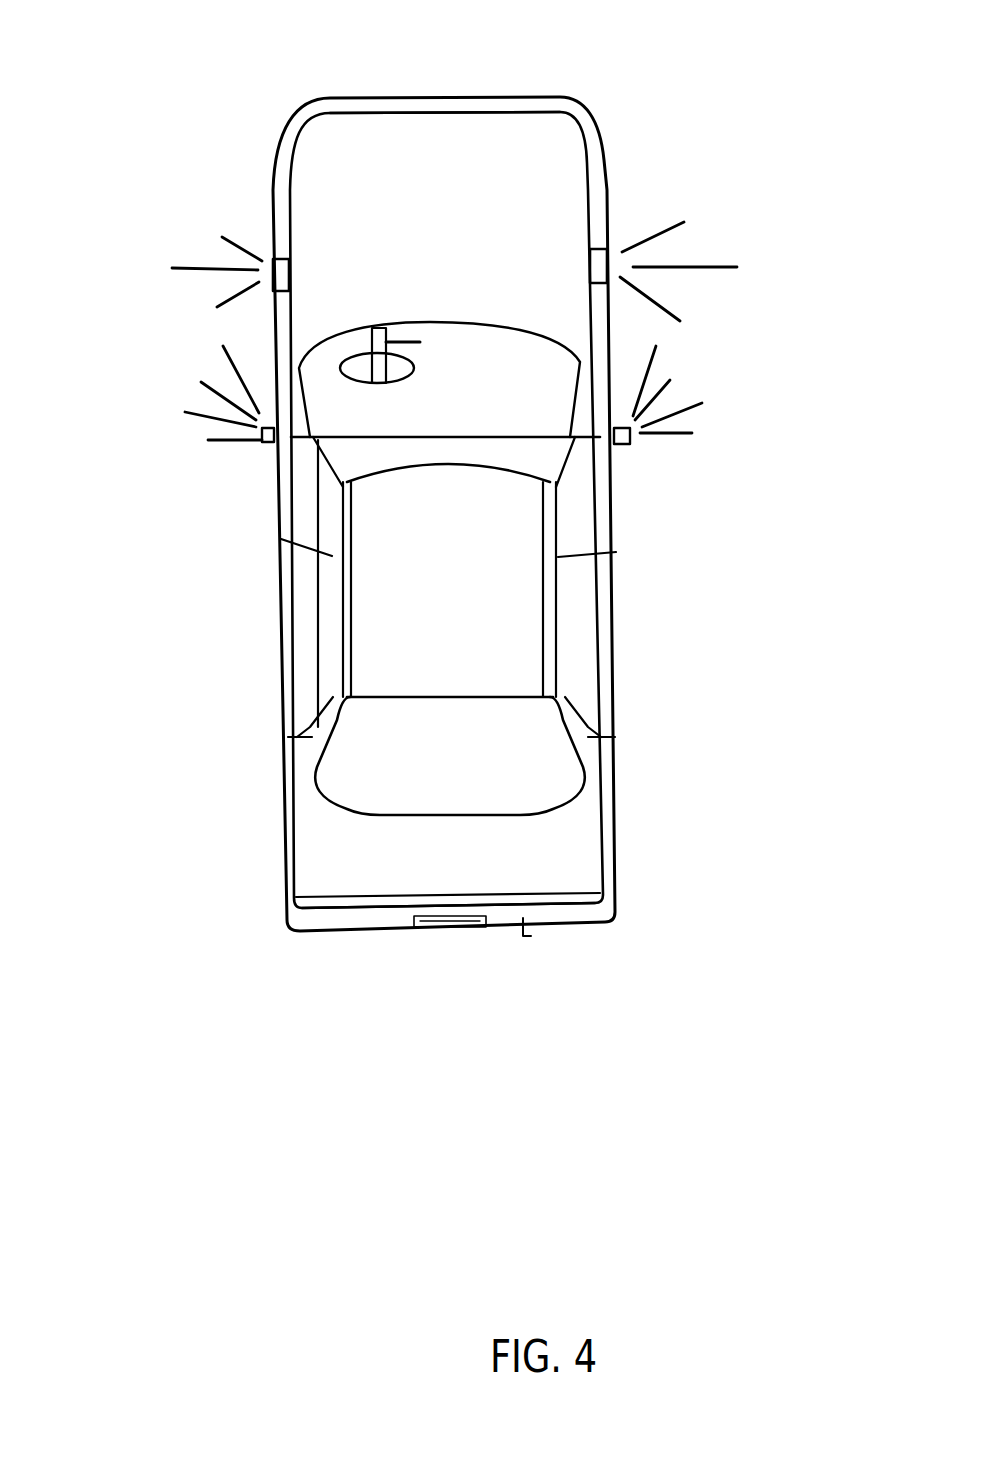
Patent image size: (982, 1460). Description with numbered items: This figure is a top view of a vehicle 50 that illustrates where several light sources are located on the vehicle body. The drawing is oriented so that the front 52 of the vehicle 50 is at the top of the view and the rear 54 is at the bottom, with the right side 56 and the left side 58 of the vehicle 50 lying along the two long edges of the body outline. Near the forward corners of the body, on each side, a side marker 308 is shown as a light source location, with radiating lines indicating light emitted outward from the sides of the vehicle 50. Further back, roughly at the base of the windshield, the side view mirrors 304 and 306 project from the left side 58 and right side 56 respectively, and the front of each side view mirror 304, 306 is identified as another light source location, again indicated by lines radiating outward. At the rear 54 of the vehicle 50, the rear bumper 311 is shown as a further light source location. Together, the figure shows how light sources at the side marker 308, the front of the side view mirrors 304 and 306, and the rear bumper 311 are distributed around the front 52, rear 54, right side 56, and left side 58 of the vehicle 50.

The vehicle 50 is at (285, 845).
The front 52 is at (410, 73).
The rear 54 is at (383, 931).
The right side 56 is at (625, 672).
The left side 58 is at (275, 683).
The side view mirror 304 is at (262, 443).
The side view mirror 306 is at (637, 443).
The side marker 308 is at (265, 262).
The rear bumper 311 is at (520, 940).